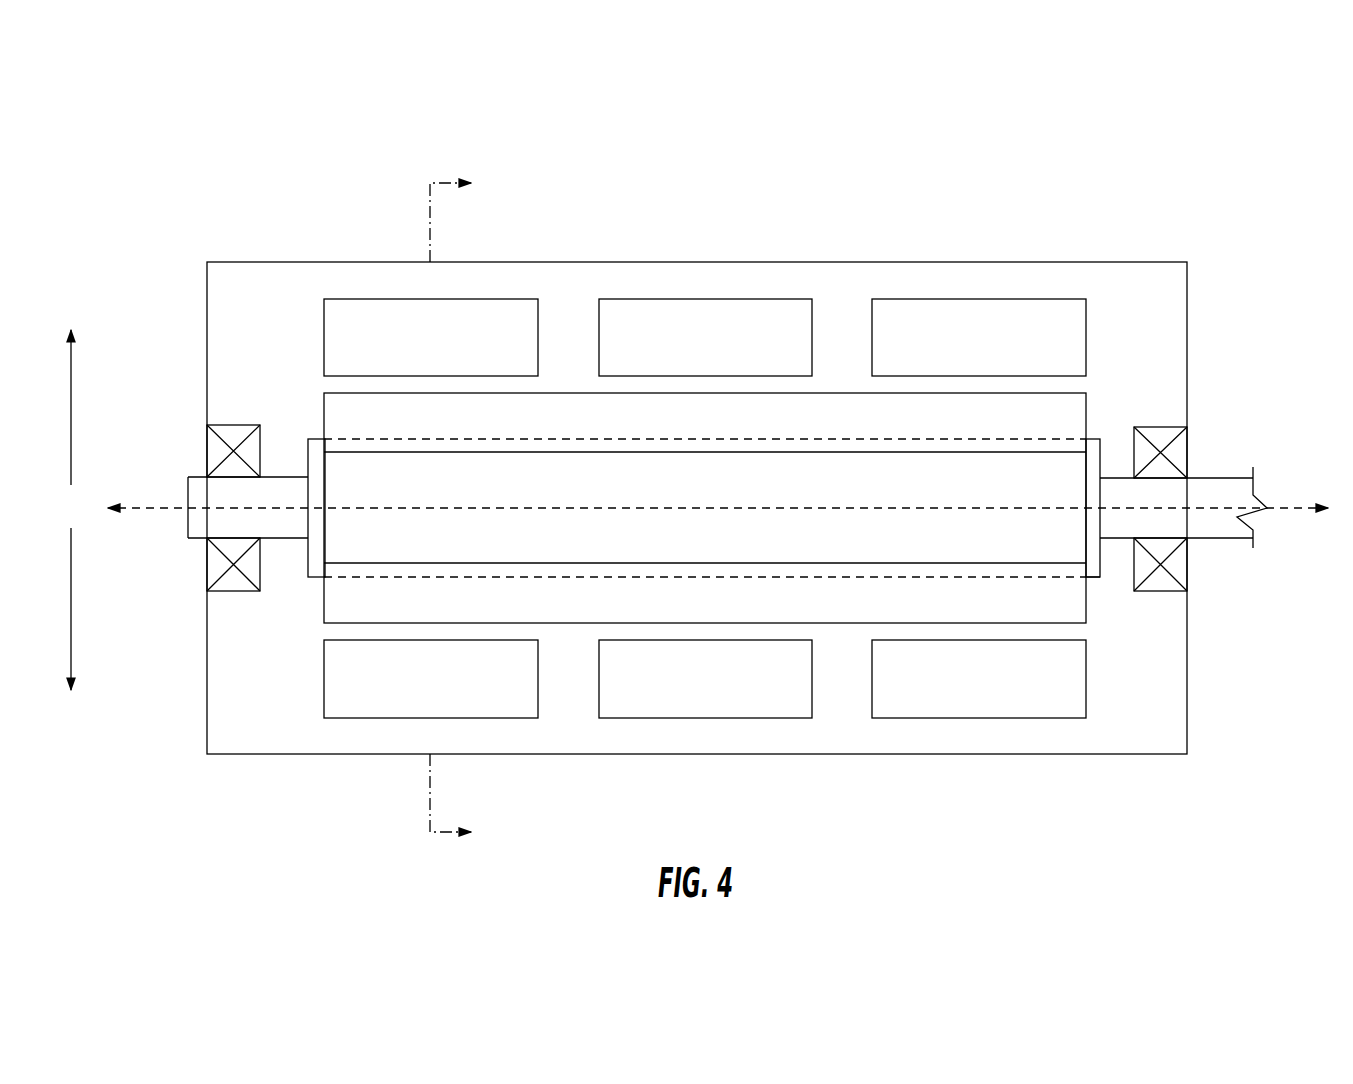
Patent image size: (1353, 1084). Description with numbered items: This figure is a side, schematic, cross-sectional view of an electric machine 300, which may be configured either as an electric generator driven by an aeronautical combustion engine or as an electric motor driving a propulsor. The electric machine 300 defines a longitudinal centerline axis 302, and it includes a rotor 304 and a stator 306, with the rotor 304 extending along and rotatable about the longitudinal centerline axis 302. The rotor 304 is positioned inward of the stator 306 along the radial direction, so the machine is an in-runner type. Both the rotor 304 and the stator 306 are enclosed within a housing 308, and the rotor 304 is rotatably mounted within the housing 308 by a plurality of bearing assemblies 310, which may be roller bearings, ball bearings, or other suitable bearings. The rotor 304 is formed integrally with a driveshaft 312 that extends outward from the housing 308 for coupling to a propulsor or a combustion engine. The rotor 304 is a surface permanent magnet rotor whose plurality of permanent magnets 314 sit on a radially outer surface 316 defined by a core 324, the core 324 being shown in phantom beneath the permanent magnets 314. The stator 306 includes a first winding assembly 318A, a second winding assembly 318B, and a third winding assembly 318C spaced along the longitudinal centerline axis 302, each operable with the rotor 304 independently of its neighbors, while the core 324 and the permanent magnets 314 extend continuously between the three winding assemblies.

The electric machine 300 is at (1002, 195).
The longitudinal centerline axis 302 is at (161, 506).
The rotor 304 is at (1112, 395).
The stator 306 is at (1122, 335).
The housing 308 is at (302, 262).
The bearing assemblies 310 is at (218, 425).
The driveshaft 312 is at (1222, 478).
The permanent magnets 314 is at (345, 422).
The radially outer surface 316 is at (1094, 582).
The first winding assembly 318A is at (512, 278).
The second winding assembly 318B is at (720, 298).
The third winding assembly 318C is at (1002, 298).
The core 324 is at (1092, 448).